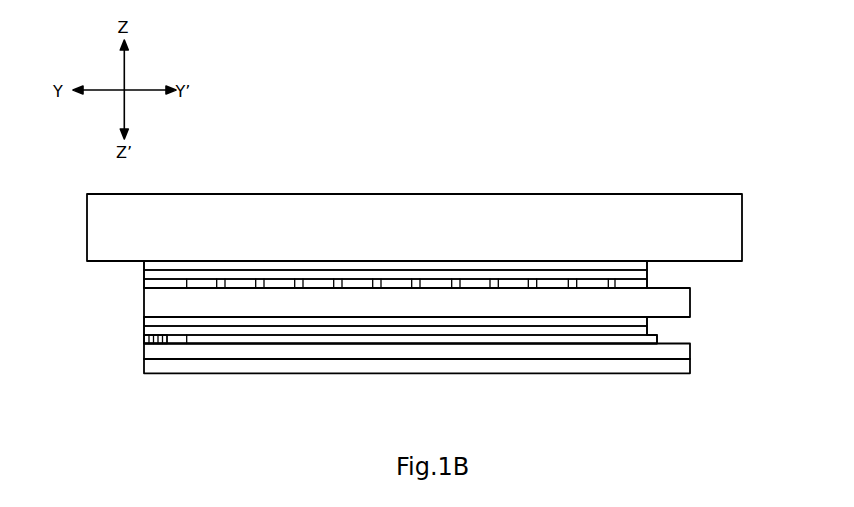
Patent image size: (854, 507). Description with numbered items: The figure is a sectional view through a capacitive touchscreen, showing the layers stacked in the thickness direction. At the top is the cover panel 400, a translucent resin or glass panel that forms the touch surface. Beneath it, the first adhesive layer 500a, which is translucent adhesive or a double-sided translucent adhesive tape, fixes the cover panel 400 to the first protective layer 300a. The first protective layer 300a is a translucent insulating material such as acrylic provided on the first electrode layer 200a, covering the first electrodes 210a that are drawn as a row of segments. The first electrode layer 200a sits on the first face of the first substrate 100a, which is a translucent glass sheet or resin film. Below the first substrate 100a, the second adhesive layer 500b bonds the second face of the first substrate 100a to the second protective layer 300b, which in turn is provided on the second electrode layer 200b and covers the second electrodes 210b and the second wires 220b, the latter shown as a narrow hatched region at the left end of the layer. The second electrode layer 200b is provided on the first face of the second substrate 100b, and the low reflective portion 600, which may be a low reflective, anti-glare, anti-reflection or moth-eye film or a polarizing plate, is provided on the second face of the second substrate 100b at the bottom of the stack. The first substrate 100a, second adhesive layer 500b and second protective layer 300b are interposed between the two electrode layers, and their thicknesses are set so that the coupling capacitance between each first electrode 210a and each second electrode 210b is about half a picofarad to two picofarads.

The cover panel 400 is at (722, 232).
The first electrode layer 200a is at (650, 284).
The first adhesive layer 500a is at (632, 263).
The first protective layer 300a is at (602, 275).
The first electrodes 210a is at (395, 220).
The first substrate 100a is at (668, 303).
The second electrode layer 200b is at (662, 339).
The second adhesive layer 500b is at (588, 322).
The second protective layer 300b is at (538, 331).
The second electrodes 210b is at (483, 340).
The second wires 220b is at (142, 340).
The second substrate 100b is at (672, 352).
The low reflective portion 600 is at (653, 367).